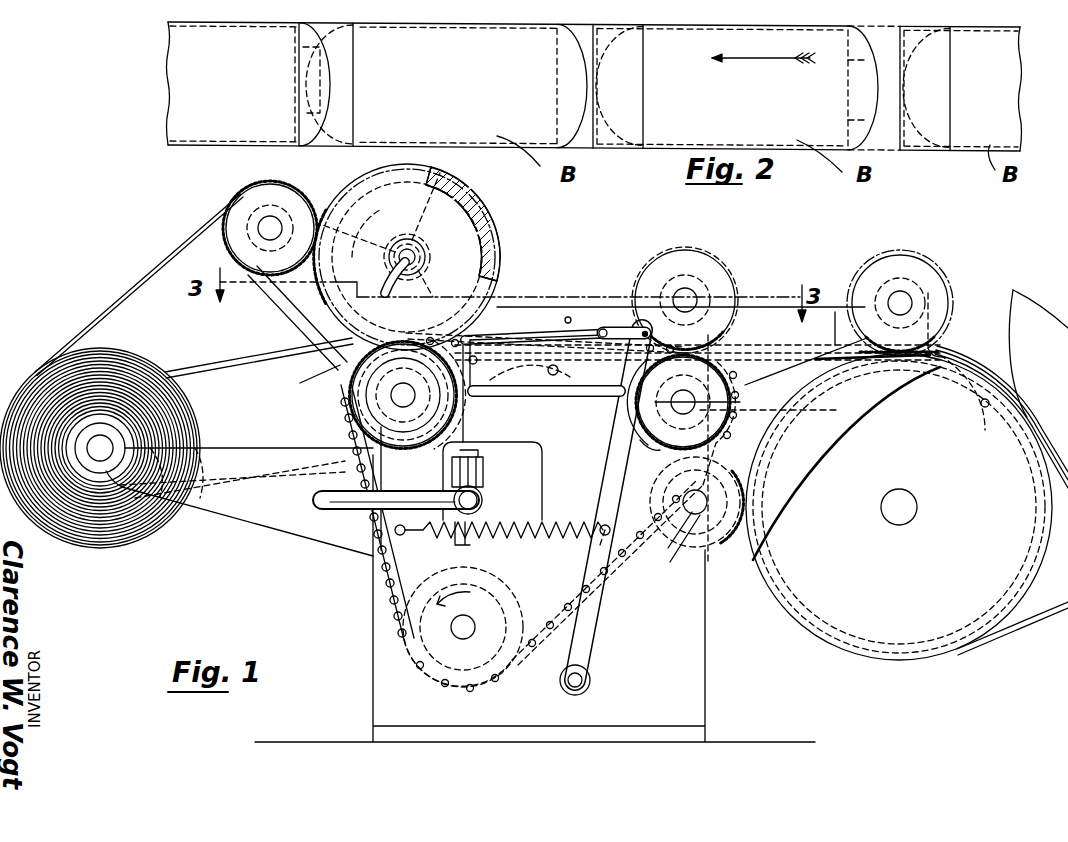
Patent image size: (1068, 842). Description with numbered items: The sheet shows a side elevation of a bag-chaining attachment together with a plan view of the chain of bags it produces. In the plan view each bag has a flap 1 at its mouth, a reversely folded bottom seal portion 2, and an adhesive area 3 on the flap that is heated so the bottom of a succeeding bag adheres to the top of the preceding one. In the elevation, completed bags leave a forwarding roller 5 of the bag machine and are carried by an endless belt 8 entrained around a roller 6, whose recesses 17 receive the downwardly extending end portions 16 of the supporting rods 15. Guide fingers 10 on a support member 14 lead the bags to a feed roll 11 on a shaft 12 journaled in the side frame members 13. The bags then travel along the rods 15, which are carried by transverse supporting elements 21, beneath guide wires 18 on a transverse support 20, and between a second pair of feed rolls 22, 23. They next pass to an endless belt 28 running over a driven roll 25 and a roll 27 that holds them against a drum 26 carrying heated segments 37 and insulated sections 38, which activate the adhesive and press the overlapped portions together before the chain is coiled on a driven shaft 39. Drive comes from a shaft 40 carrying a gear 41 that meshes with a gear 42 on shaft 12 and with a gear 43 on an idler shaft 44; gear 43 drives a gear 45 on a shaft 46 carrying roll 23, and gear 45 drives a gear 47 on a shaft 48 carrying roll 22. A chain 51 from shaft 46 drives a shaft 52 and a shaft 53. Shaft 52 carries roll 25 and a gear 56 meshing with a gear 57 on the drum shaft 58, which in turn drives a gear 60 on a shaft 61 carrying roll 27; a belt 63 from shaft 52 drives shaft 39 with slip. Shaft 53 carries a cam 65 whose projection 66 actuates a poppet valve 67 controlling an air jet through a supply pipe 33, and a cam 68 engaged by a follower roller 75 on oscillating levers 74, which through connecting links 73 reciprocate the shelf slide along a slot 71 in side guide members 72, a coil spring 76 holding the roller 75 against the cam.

In FIG. 2, the flap 1 is at (327, 78).
In FIG. 2, the reversely folded bottom seal portion 2 is at (353, 104).
In FIG. 2, the adhesive area 3 is at (300, 50).
In FIG. 1, the forwarding roller 5 is at (1040, 302).
In FIG. 1, the roller 6 is at (901, 593).
In FIG. 1, the endless belt 8 is at (1040, 620).
In FIG. 1, the guide fingers 10 is at (1001, 368).
In FIG. 1, the feed roll 11 is at (950, 284).
In FIG. 1, the shaft 12 is at (895, 300).
In FIG. 1, the side frame members 13 is at (285, 318).
In FIG. 1, the support member 14 is at (942, 345).
In FIG. 1, the supporting rods 15 is at (580, 354).
In FIG. 1, the downwardly extending end portions 16 is at (968, 406).
In FIG. 1, the recesses 17 is at (984, 410).
In FIG. 1, the guide wires 18 is at (778, 346).
In FIG. 1, the transverse support 20 is at (835, 312).
In FIG. 1, the transverse supporting elements 21 is at (508, 338).
In FIG. 1, the feed roll 22 is at (650, 266).
In FIG. 1, the feed roll 23 is at (700, 410).
In FIG. 1, the driven roll 25 is at (383, 472).
In FIG. 1, the drum 26 is at (433, 212).
In FIG. 1, the roll 27 is at (205, 216).
In FIG. 1, the endless belt 28 is at (335, 368).
In FIG. 1, the supply pipe 33 is at (318, 505).
In FIG. 1, the heated segments 37 is at (521, 229).
In FIG. 1, the insulated sections 38 is at (490, 195).
In FIG. 1, the driven shaft 39 is at (110, 455).
In FIG. 1, the shaft 40 is at (912, 520).
In FIG. 1, the gear 41 is at (808, 470).
In FIG. 1, the gear 42 is at (897, 252).
In FIG. 1, the gear 43 is at (748, 548).
In FIG. 1, the idler shaft 44 is at (690, 518).
In FIG. 1, the gear 45 is at (640, 440).
In FIG. 1, the shaft 46 is at (712, 400).
In FIG. 1, the gear 47 is at (670, 250).
In FIG. 1, the shaft 48 is at (690, 296).
In FIG. 1, the chain 51 is at (616, 505).
In FIG. 1, the shaft 52 is at (395, 400).
In FIG. 1, the shaft 53 is at (452, 628).
In FIG. 1, the gear 56 is at (352, 393).
In FIG. 1, the gear 57 is at (322, 196).
In FIG. 1, the shaft 58 is at (400, 250).
In FIG. 1, the gear 60 is at (308, 200).
In FIG. 1, the shaft 61 is at (262, 222).
In FIG. 1, the belt 63 is at (205, 363).
In FIG. 1, the cam 65 is at (559, 678).
In FIG. 1, the projection 66 is at (487, 608).
In FIG. 1, the poppet valve 67 is at (485, 485).
In FIG. 1, the cam 68 is at (545, 540).
In FIG. 1, the slot 71 is at (527, 336).
In FIG. 1, the side guide members 72 is at (551, 311).
In FIG. 1, the connecting links 73 is at (608, 327).
In FIG. 1, the oscillating levers 74 is at (610, 485).
In FIG. 1, the follower roller 75 is at (540, 512).
In FIG. 1, the coil spring 76 is at (548, 525).